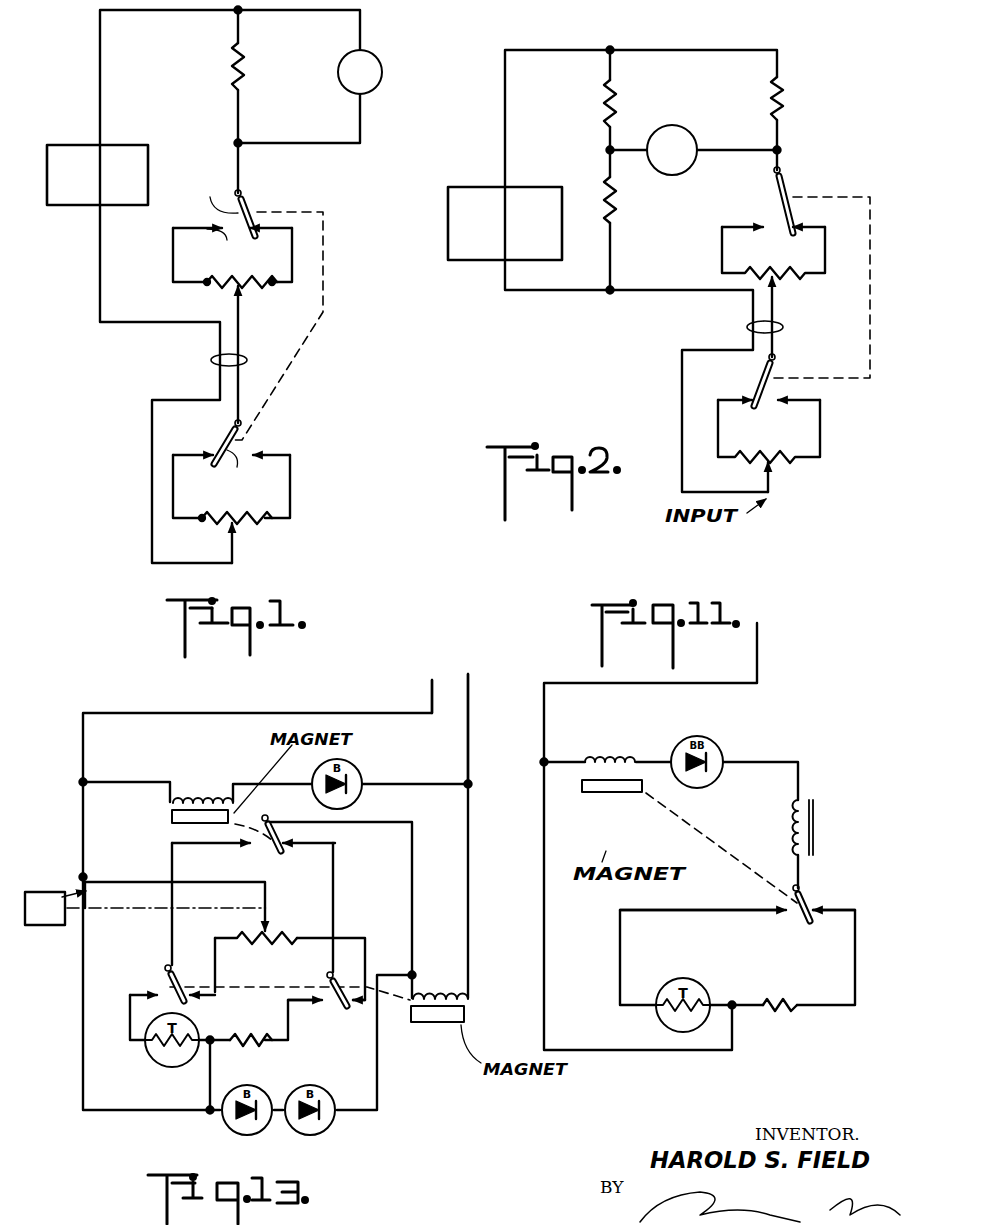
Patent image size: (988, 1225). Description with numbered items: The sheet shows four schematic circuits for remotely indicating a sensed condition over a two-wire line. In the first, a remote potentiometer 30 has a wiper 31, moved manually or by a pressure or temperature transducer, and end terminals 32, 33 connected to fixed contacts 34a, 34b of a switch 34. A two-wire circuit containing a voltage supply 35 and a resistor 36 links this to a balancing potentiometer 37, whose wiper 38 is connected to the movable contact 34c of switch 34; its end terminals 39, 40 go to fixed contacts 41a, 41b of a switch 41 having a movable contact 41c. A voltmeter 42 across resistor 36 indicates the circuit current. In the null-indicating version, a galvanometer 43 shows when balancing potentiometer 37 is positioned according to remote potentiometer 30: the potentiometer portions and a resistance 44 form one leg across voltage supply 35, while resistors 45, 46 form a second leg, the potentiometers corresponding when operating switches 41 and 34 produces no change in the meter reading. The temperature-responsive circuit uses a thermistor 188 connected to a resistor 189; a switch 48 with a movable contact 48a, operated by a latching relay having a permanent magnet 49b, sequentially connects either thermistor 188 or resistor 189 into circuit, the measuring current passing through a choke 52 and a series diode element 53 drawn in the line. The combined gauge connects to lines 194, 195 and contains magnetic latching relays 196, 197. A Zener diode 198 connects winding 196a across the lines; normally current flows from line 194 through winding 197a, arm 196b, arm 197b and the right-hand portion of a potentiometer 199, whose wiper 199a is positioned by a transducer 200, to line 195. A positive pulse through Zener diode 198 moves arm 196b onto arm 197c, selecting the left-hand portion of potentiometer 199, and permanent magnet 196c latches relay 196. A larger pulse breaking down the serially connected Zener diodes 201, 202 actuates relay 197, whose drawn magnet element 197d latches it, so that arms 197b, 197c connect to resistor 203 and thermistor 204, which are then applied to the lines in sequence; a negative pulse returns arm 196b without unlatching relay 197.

In FIG. 1, the remote potentiometer 30 is at (292, 524).
In FIG. 2, the remote potentiometer 30 is at (808, 472).
In FIG. 1, the wiper 31 is at (233, 556).
In FIG. 2, the wiper 31 is at (770, 481).
In FIG. 1, the end terminal 32 is at (202, 522).
In FIG. 1, the end terminal 33 is at (270, 514).
In FIG. 1, the switch 34 is at (246, 427).
In FIG. 2, the switch 34 is at (786, 369).
In FIG. 1, the fixed contact 34a is at (207, 457).
In FIG. 1, the fixed contact 34b is at (255, 456).
In FIG. 1, the movable contact 34c is at (226, 478).
In FIG. 1, the voltage supply 35 is at (148, 157).
In FIG. 2, the voltage supply 35 is at (470, 249).
In FIG. 1, the resistor 36 is at (230, 71).
In FIG. 1, the balancing potentiometer 37 is at (168, 256).
In FIG. 2, the balancing potentiometer 37 is at (718, 256).
In FIG. 1, the wiper 38 is at (241, 318).
In FIG. 1, the end terminal 39 is at (205, 284).
In FIG. 1, the end terminal 40 is at (272, 285).
In FIG. 1, the switch 41 is at (293, 181).
In FIG. 2, the switch 41 is at (795, 191).
In FIG. 1, the fixed contact 41a is at (201, 248).
In FIG. 1, the fixed contact 41b is at (260, 227).
In FIG. 1, the movable contact 41c is at (202, 191).
In FIG. 1, the voltmeter 42 is at (382, 72).
In FIG. 2, the galvanometer 43 is at (681, 130).
In FIG. 2, the resistance 44 is at (784, 94).
In FIG. 2, the resistor 45 is at (613, 110).
In FIG. 2, the resistor 46 is at (613, 206).
In FIG. 11, the switch 48 is at (756, 879).
In FIG. 11, the movable contact 48a is at (801, 894).
In FIG. 11, the permanent magnet 49b is at (602, 793).
In FIG. 11, the choke 52 is at (813, 793).
In FIG. 11, the rectifier 53 is at (705, 761).
In FIG. 11, the thermistor 188 is at (696, 985).
In FIG. 11, the resistor 189 is at (783, 998).
In FIG. 13, the line 194 is at (470, 717).
In FIG. 13, the line 195 is at (431, 690).
In FIG. 13, the magnetic latching relay 196 is at (216, 797).
In FIG. 13, the winding 196a is at (203, 794).
In FIG. 13, the arm 196b is at (283, 845).
In FIG. 13, the permanent magnet 196c is at (168, 819).
In FIG. 13, the magnetic latching relay 197 is at (469, 1009).
In FIG. 13, the winding 197a is at (440, 986).
In FIG. 13, the arm 197b is at (338, 1011).
In FIG. 13, the arm 197c is at (167, 978).
In FIG. 13, the magnet 197d is at (458, 1016).
In FIG. 13, the Zener diode 198 is at (355, 778).
In FIG. 13, the potentiometer 199 is at (297, 935).
In FIG. 13, the wiper 199a is at (265, 895).
In FIG. 13, the transducer 200 is at (52, 927).
In FIG. 13, the Zener diode 201 is at (237, 1136).
In FIG. 13, the Zener diode 202 is at (313, 1138).
In FIG. 13, the resistor 203 is at (249, 1024).
In FIG. 13, the thermistor 204 is at (163, 1061).